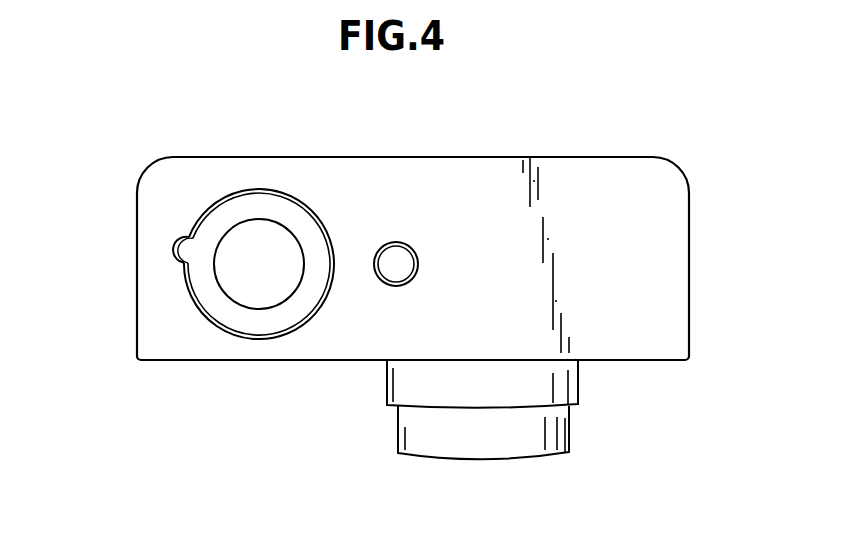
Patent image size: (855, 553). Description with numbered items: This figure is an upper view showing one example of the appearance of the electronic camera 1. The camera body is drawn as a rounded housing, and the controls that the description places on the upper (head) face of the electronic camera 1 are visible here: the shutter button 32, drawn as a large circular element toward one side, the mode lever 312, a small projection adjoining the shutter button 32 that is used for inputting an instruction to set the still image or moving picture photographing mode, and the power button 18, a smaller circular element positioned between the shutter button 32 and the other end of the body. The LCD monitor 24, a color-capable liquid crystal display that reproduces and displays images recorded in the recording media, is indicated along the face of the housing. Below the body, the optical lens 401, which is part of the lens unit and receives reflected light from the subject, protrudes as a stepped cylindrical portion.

The electronic camera 1 is at (690, 258).
The LCD monitor 24 is at (377, 157).
The shutter button 32 is at (260, 233).
The mode lever 312 is at (175, 250).
The power button 18 is at (400, 255).
The optical lens 401 is at (487, 462).